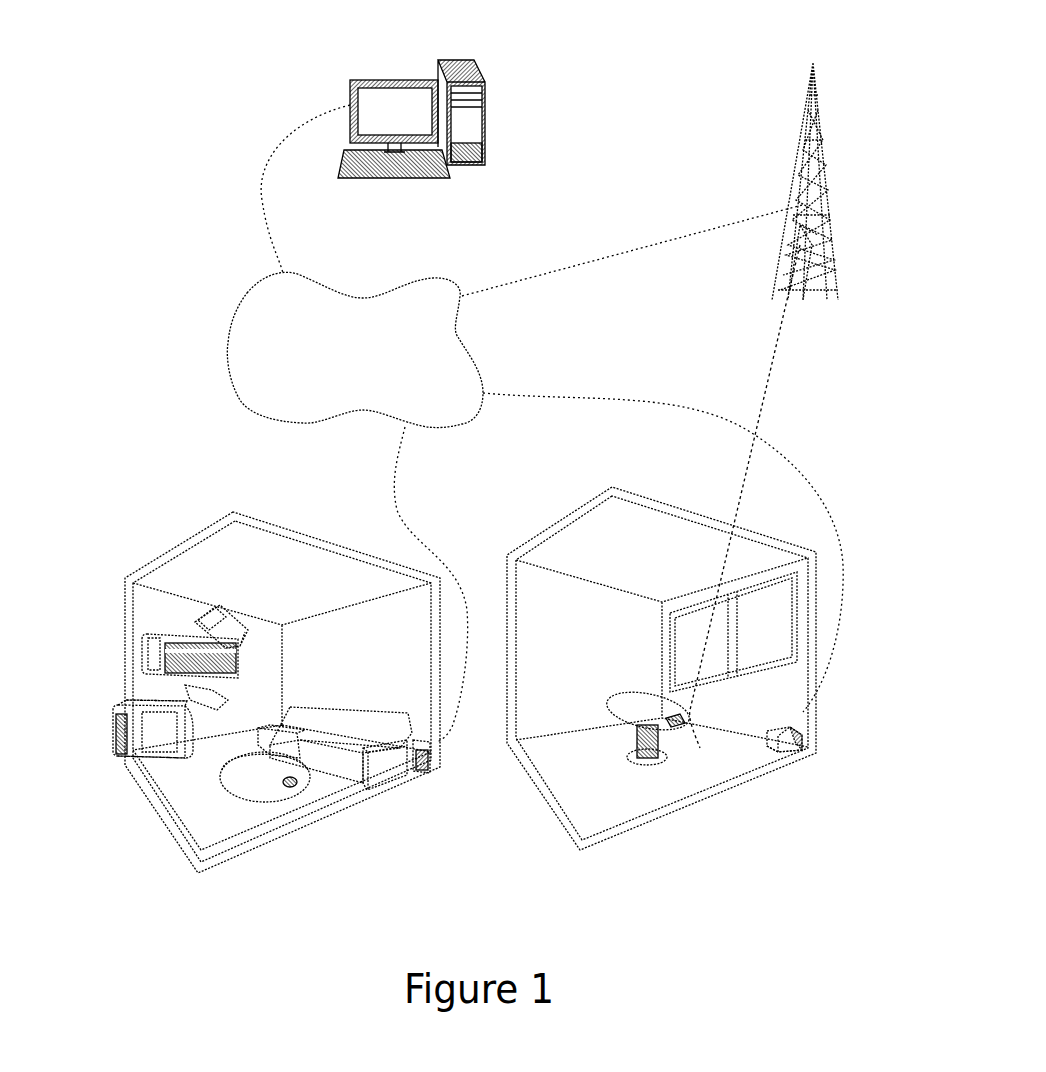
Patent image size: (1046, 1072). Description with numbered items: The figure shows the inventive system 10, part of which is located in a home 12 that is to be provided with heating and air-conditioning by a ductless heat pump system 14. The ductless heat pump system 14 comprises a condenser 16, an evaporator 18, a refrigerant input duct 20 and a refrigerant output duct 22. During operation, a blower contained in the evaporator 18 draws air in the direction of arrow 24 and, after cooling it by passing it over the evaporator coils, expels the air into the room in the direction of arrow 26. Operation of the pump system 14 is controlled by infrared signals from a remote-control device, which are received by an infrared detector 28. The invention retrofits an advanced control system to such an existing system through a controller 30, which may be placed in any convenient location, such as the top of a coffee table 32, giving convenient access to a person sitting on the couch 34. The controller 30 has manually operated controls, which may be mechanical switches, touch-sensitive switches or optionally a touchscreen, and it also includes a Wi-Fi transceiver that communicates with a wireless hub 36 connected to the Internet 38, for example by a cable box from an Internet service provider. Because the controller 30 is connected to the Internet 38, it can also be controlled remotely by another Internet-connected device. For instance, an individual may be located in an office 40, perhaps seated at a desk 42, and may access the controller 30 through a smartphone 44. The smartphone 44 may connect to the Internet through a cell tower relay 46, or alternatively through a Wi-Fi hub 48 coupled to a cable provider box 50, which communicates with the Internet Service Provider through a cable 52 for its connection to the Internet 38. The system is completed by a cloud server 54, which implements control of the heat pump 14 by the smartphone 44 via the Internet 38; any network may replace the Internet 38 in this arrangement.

The system 10 is at (152, 194).
The home 12 is at (185, 540).
The ductless heat pump system 14 is at (236, 628).
The condenser 16 is at (134, 760).
The evaporator 18 is at (134, 652).
The refrigerant input duct 20 is at (126, 700).
The refrigerant output duct 22 is at (153, 729).
The arrow 24 is at (222, 612).
The arrow 26 is at (220, 696).
The infrared detector 28 is at (176, 636).
The controller 30 is at (265, 790).
The coffee table 32 is at (228, 770).
The couch 34 is at (340, 707).
The wireless hub 36 is at (428, 775).
The Internet 38 is at (252, 318).
The office 40 is at (548, 522).
The desk 42 is at (613, 693).
The smartphone 44 is at (678, 720).
The cell tower relay 46 is at (802, 117).
The Wi-Fi hub 48 is at (780, 733).
The cable provider box 50 is at (800, 752).
The cable 52 is at (803, 722).
The cloud server 54 is at (343, 133).